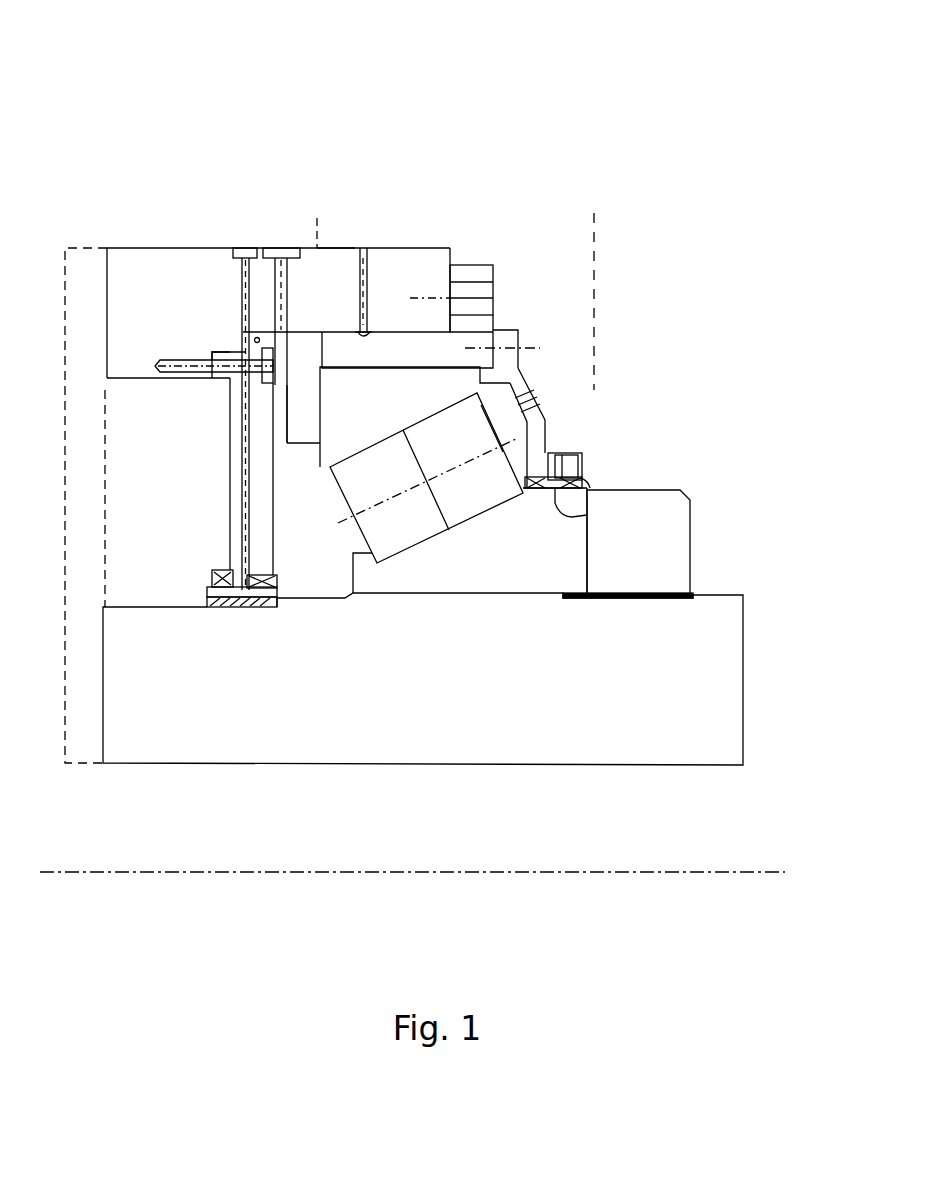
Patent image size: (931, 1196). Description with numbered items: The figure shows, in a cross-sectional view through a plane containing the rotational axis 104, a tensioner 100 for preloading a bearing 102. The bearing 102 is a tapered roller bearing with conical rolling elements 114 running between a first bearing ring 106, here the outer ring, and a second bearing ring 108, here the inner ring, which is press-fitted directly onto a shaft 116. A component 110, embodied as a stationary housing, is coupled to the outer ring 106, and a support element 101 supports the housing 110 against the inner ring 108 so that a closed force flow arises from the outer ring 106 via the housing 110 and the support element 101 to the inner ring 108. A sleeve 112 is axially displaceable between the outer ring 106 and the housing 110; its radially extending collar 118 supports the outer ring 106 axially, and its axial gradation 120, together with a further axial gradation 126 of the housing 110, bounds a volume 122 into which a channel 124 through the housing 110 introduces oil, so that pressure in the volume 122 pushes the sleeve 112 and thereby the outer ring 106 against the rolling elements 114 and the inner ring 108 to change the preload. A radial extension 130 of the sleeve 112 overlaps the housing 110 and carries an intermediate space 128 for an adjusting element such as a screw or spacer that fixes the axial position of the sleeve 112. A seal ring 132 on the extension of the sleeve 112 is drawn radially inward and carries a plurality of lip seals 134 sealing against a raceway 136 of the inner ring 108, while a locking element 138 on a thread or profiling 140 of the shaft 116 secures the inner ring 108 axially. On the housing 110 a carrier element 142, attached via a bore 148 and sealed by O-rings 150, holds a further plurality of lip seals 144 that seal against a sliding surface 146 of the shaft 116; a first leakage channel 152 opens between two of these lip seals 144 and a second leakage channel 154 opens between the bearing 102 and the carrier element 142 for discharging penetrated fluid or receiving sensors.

The tensioner 100 is at (412, 477).
The support element 101 is at (83, 248).
The bearing 102 is at (317, 193).
The rotational axis 104 is at (697, 877).
The first bearing ring 106 is at (378, 414).
The second bearing ring 108 is at (551, 567).
The component 110 is at (165, 248).
The sleeve 112 is at (416, 357).
The conical rolling elements 114 is at (465, 453).
The shaft 116 is at (435, 729).
The radially extending collar 118 is at (362, 332).
The axial gradation 120 is at (373, 330).
The volume 122 is at (336, 248).
The channel 124 is at (383, 260).
The further axial gradation 126 is at (287, 412).
The intermediate space 128 is at (455, 265).
The radial extension 130 is at (497, 268).
The seal ring 132 is at (527, 373).
The plurality of lip seals 134 is at (590, 468).
The raceway 136 is at (610, 497).
The locking element 138 is at (619, 560).
The thread or profiling 140 is at (633, 600).
The carrier element 142 is at (230, 490).
The further plurality of lip seals 144 is at (282, 587).
The sliding surface 146 is at (243, 607).
The bore 148 is at (170, 358).
The plurality of O-rings 150 is at (250, 338).
The first leakage channel 152 is at (213, 262).
The second leakage channel 154 is at (302, 248).